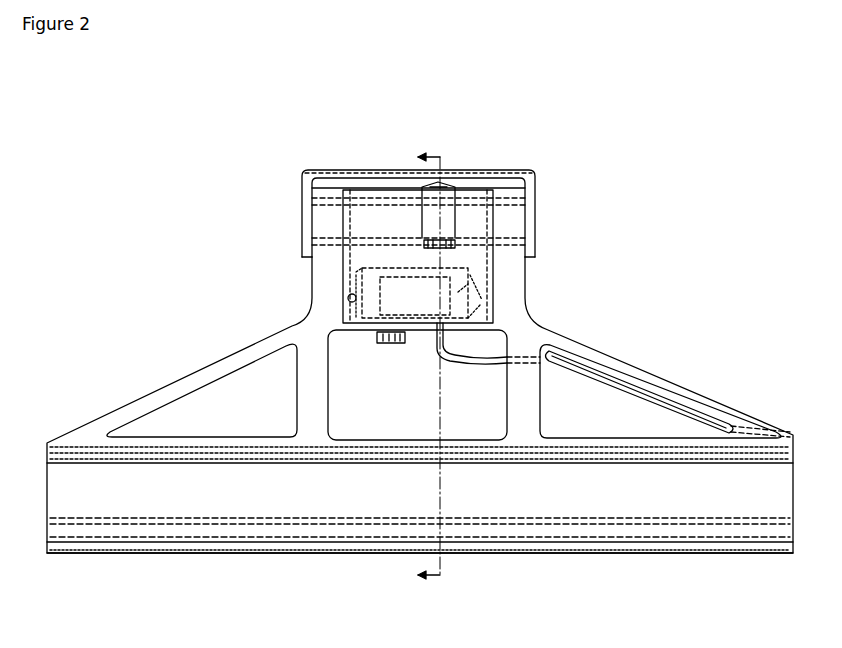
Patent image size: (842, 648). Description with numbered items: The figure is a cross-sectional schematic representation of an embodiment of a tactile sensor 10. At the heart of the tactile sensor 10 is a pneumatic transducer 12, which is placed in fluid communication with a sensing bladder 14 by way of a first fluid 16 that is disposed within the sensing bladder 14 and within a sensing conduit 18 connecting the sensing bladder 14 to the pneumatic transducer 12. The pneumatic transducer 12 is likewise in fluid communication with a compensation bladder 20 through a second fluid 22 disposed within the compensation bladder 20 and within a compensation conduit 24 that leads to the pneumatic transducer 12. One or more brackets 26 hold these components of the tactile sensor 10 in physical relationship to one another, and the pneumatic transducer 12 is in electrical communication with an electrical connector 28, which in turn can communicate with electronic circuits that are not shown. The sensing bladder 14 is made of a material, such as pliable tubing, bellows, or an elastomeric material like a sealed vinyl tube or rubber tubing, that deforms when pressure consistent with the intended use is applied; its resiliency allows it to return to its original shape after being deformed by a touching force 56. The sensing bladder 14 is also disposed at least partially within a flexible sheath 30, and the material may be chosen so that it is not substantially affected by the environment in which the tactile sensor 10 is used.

The tactile sensor 10 is at (503, 104).
The pneumatic transducer 12 is at (453, 313).
The sensing bladder 14 is at (308, 553).
The first fluid 16 is at (368, 553).
The sensing conduit 18 is at (447, 350).
The compensation bladder 20 is at (447, 229).
The second fluid 22 is at (433, 230).
The compensation conduit 24 is at (441, 265).
The bracket 26 is at (168, 380).
The electrical connector 28 is at (377, 333).
The flexible sheath 30 is at (235, 510).
The touching force 56 is at (678, 554).